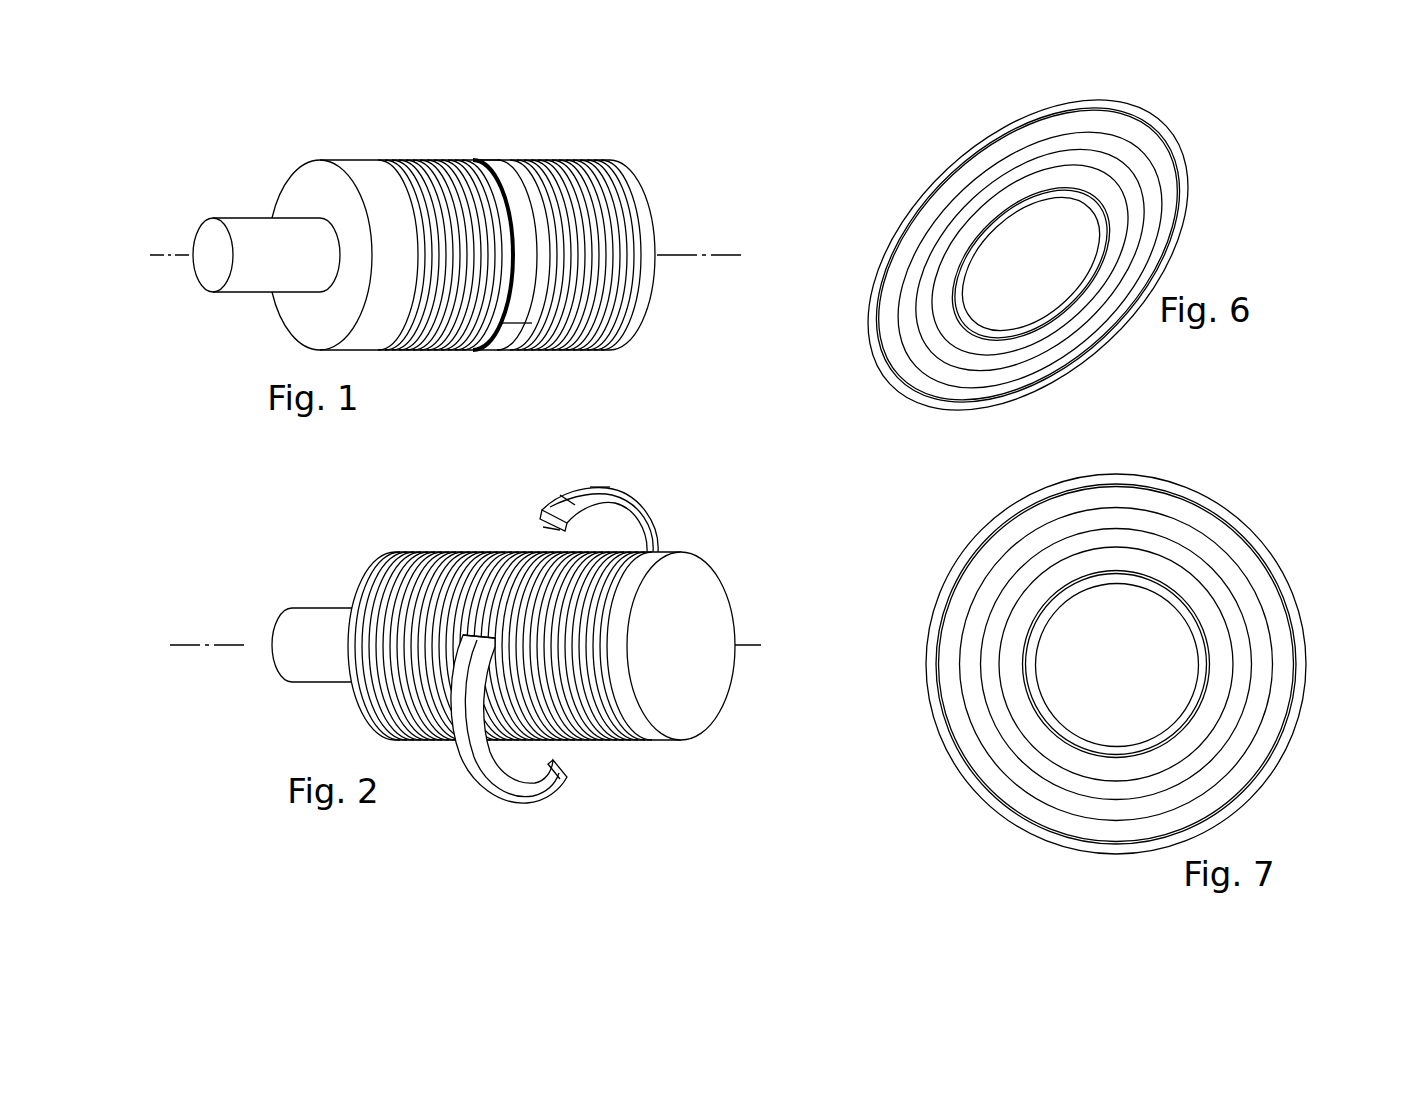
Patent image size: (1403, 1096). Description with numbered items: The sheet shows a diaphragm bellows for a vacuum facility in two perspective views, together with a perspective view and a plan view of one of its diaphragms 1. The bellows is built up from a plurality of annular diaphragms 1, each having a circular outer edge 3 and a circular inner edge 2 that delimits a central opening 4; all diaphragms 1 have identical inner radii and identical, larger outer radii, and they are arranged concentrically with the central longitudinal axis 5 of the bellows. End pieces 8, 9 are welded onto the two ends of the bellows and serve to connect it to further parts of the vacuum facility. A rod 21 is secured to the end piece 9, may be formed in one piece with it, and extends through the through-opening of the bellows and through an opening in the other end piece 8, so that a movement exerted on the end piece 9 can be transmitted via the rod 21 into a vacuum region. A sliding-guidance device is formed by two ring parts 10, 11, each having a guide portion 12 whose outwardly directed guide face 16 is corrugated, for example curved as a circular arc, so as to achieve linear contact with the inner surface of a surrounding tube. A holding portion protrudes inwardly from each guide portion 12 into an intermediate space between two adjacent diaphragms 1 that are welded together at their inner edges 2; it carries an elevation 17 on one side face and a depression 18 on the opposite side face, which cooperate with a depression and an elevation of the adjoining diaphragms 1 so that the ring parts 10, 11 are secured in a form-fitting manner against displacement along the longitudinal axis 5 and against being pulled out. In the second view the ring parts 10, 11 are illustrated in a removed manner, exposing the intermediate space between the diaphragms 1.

In FIG. 1, the diaphragm 1 is at (598, 226).
In FIG. 2, the diaphragm 1 is at (595, 673).
In FIG. 6, the diaphragm 1 is at (960, 185).
In FIG. 7, the diaphragm 1 is at (1216, 531).
In FIG. 6, the inner edge 2 is at (990, 238).
In FIG. 7, the inner edge 2 is at (1090, 585).
In FIG. 6, the outer edge 3 is at (1183, 205).
In FIG. 7, the outer edge 3 is at (1280, 564).
In FIG. 6, the central opening 4 is at (1068, 255).
In FIG. 7, the central opening 4 is at (1118, 664).
In FIG. 1, the longitudinal axis 5 is at (164, 258).
In FIG. 2, the longitudinal axis 5 is at (197, 646).
In FIG. 1, the end piece 8 is at (362, 176).
In FIG. 2, the end piece 8 is at (380, 580).
In FIG. 1, the end piece 9 is at (642, 227).
In FIG. 2, the end piece 9 is at (683, 713).
In FIG. 1, the ring part 10 is at (488, 356).
In FIG. 2, the ring part 10 is at (600, 482).
In FIG. 1, the ring part 11 is at (499, 150).
In FIG. 2, the ring part 11 is at (558, 676).
In FIG. 1, the guide portion 12 is at (522, 190).
In FIG. 1, the guide face 16 is at (537, 300).
In FIG. 2, the guide face 16 is at (558, 497).
In FIG. 2, the elevation 17 is at (548, 527).
In FIG. 2, the depression 18 is at (625, 518).
In FIG. 1, the rod 21 is at (258, 278).
In FIG. 2, the rod 21 is at (302, 661).